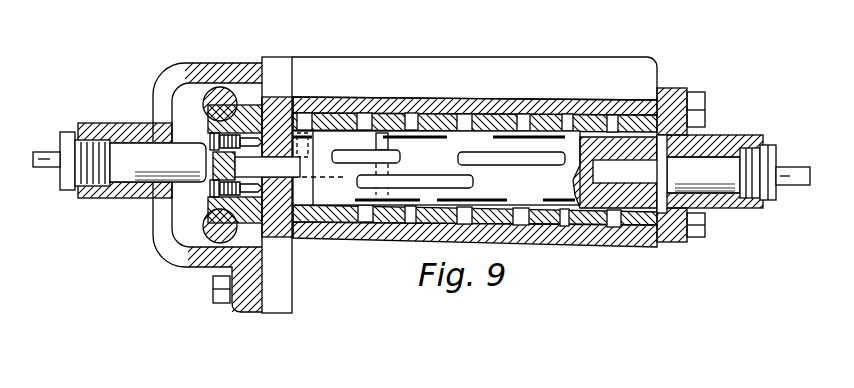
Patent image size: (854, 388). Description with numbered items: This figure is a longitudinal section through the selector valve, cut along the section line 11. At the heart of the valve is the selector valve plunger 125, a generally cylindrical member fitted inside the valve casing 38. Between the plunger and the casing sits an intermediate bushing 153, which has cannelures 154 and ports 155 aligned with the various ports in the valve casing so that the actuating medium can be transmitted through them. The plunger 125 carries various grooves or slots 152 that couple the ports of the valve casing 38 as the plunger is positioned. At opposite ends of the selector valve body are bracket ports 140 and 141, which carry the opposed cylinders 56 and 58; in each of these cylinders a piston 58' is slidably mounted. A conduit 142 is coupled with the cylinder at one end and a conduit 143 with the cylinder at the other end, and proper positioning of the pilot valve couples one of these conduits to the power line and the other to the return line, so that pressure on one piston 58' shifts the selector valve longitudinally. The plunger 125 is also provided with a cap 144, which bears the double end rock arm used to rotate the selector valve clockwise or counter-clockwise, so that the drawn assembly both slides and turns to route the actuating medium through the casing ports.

The section line 11- 11 is at (207, 17).
The valve casing 38 is at (507, 62).
The cylinder 56 is at (118, 178).
The cylinder 58 is at (712, 194).
The piston 58' is at (409, 146).
The selector valve plunger 125 is at (642, 135).
The bracket port 140 is at (207, 60).
The bracket port 141 is at (677, 88).
The conduit 142 is at (42, 157).
The conduit 143 is at (793, 175).
The cap 144 is at (246, 105).
The grooves or slots 152 is at (474, 182).
The intermediate bushing 153 is at (596, 100).
The cannelures 154 is at (562, 232).
The ports 155 is at (584, 226).